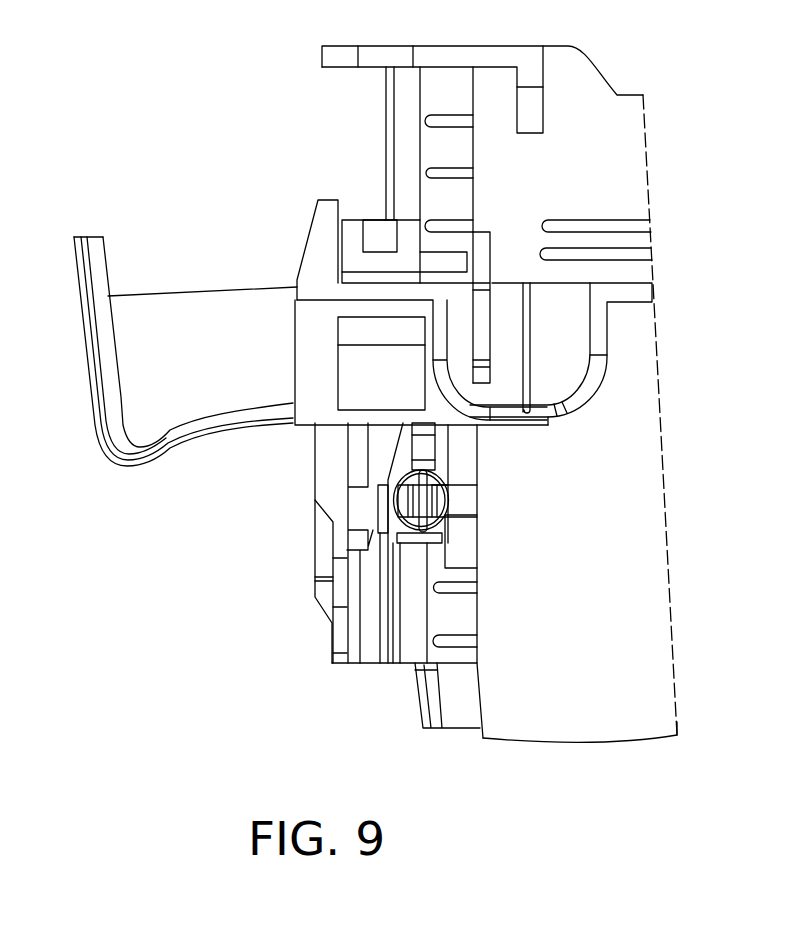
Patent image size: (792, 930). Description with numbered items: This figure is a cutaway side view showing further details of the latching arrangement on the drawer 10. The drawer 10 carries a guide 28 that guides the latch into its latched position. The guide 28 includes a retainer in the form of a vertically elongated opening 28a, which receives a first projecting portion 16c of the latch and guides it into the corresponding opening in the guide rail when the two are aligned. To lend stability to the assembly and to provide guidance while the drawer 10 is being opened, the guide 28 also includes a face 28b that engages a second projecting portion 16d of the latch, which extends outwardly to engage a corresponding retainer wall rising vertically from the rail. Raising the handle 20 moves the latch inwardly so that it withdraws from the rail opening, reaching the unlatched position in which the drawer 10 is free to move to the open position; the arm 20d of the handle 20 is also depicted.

The drawer 10 is at (637, 455).
The guide 28 is at (459, 276).
The opening 28a is at (354, 362).
The face 28b is at (485, 183).
The first projecting portion 16c is at (377, 372).
The second projecting portion 16d is at (407, 257).
The handle 20 is at (239, 450).
The lever arm 20d is at (118, 472).